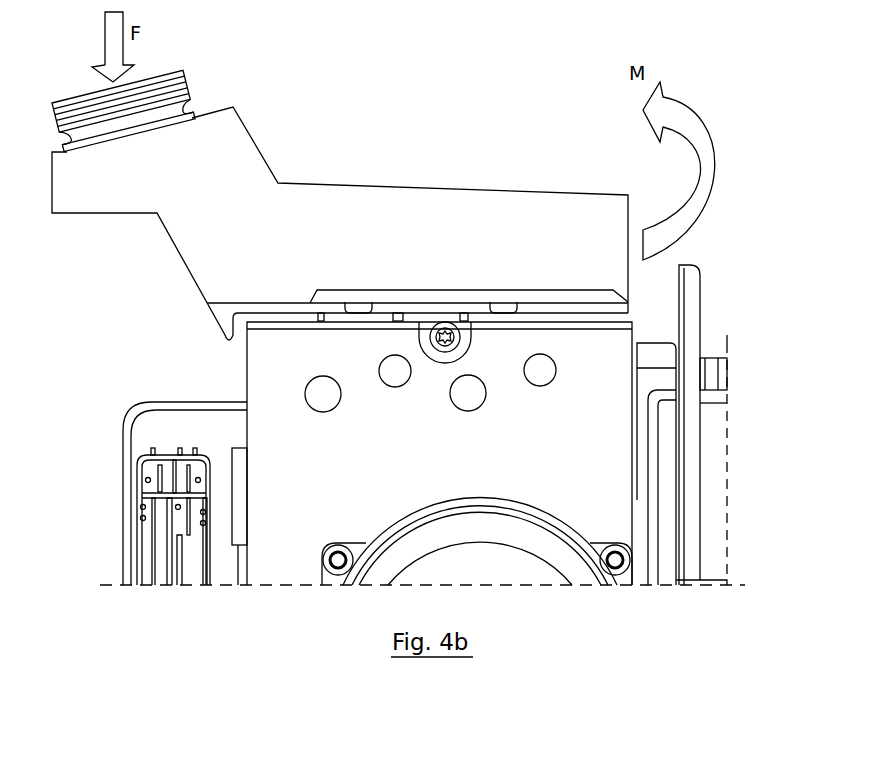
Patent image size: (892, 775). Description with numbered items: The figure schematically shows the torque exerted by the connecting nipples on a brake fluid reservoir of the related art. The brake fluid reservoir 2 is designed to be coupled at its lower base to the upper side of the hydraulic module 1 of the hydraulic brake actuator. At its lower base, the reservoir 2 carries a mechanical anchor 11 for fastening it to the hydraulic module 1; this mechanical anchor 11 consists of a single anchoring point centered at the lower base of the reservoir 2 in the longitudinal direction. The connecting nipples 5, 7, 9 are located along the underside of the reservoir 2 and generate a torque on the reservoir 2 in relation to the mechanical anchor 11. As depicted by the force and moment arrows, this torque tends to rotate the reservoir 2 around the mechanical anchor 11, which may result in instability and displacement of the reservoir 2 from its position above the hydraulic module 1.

The hydraulic module 1 is at (742, 478).
The brake fluid reservoir 2 is at (361, 130).
The nipple 5 is at (500, 305).
The nipple 7 is at (360, 307).
The nipple 9 is at (575, 298).
The mechanical anchor 11 is at (430, 336).